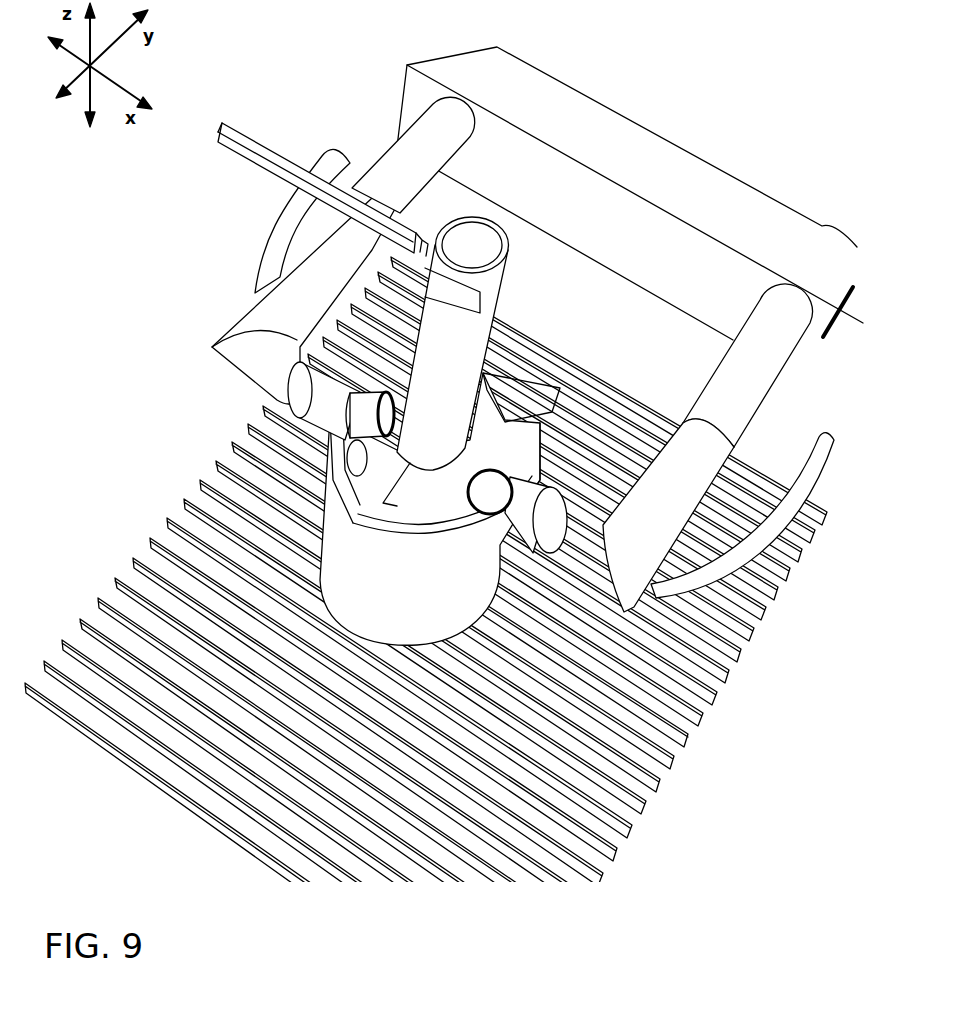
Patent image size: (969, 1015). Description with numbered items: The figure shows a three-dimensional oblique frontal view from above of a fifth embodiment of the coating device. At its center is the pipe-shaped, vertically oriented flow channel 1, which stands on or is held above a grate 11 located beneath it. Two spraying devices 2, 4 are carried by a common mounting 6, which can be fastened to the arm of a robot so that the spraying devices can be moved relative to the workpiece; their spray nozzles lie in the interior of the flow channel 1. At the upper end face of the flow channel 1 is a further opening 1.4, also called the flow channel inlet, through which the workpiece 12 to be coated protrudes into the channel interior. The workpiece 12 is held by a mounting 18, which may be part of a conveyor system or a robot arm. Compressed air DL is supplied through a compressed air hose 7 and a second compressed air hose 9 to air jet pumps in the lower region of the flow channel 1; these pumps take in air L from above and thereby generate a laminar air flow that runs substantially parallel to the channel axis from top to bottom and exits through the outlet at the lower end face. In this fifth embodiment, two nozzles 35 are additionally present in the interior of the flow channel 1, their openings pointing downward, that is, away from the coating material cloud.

The flow channel 1 is at (330, 555).
The further opening 1.4 is at (513, 453).
The spraying device 2 is at (400, 157).
The spraying device 4 is at (740, 390).
The common mounting 6 is at (620, 137).
The compressed air hose 7 is at (265, 262).
The second compressed air hose 9 is at (747, 553).
The grate 11 is at (675, 762).
The workpiece 12 is at (477, 340).
The mounting 18 is at (230, 143).
The nozzles 35 is at (362, 465).
The compressed air DL is at (590, 280).
The air L is at (475, 354).